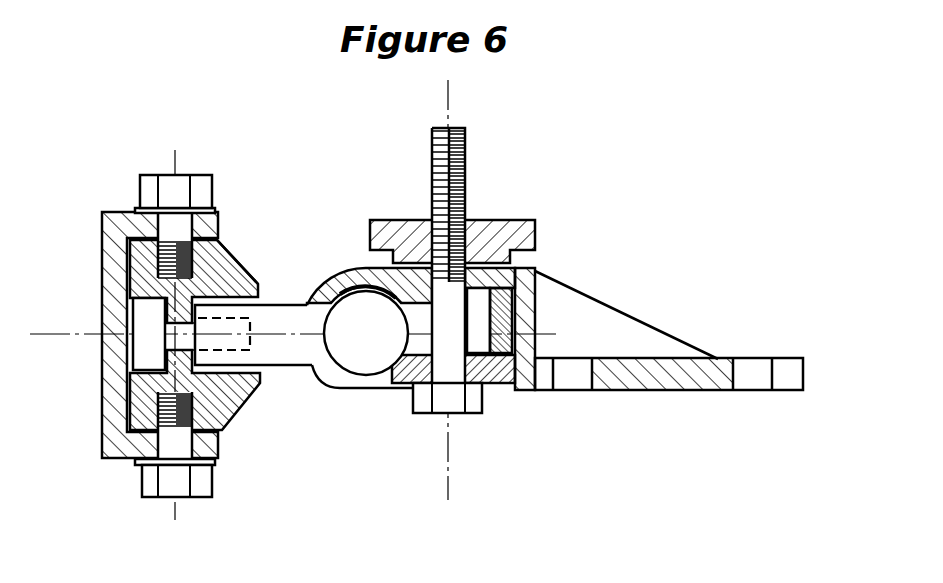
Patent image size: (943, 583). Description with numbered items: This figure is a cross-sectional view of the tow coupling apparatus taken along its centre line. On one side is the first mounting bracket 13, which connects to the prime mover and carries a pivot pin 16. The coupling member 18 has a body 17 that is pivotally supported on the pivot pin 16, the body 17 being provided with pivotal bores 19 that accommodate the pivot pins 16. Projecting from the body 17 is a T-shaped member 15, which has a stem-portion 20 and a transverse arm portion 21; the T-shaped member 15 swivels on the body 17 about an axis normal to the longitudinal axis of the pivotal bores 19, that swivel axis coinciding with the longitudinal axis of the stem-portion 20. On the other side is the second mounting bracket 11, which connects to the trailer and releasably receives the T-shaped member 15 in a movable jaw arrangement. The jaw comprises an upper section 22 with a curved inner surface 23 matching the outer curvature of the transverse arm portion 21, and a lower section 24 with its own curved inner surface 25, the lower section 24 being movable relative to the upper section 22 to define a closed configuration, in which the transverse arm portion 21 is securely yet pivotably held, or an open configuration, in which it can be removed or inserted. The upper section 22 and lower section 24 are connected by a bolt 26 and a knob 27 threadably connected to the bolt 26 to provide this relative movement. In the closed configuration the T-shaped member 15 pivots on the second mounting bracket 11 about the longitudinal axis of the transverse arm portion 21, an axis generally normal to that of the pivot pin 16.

The second mounting bracket 11 is at (592, 318).
The first mounting bracket 13 is at (108, 442).
The T-shaped member 15 is at (295, 384).
The pivot pin 16 is at (174, 182).
The body 17 is at (218, 238).
The coupling member 18 is at (244, 254).
The pivotal bores 19 is at (143, 268).
The stem-portion 20 is at (260, 358).
The transverse arm portion 21 is at (360, 368).
The upper section 22 is at (352, 277).
The curved inner surface 23 is at (338, 288).
The lower section 24 is at (412, 387).
The curved inner surface 25 is at (392, 356).
The bolt 26 is at (460, 413).
The knob 27 is at (518, 220).